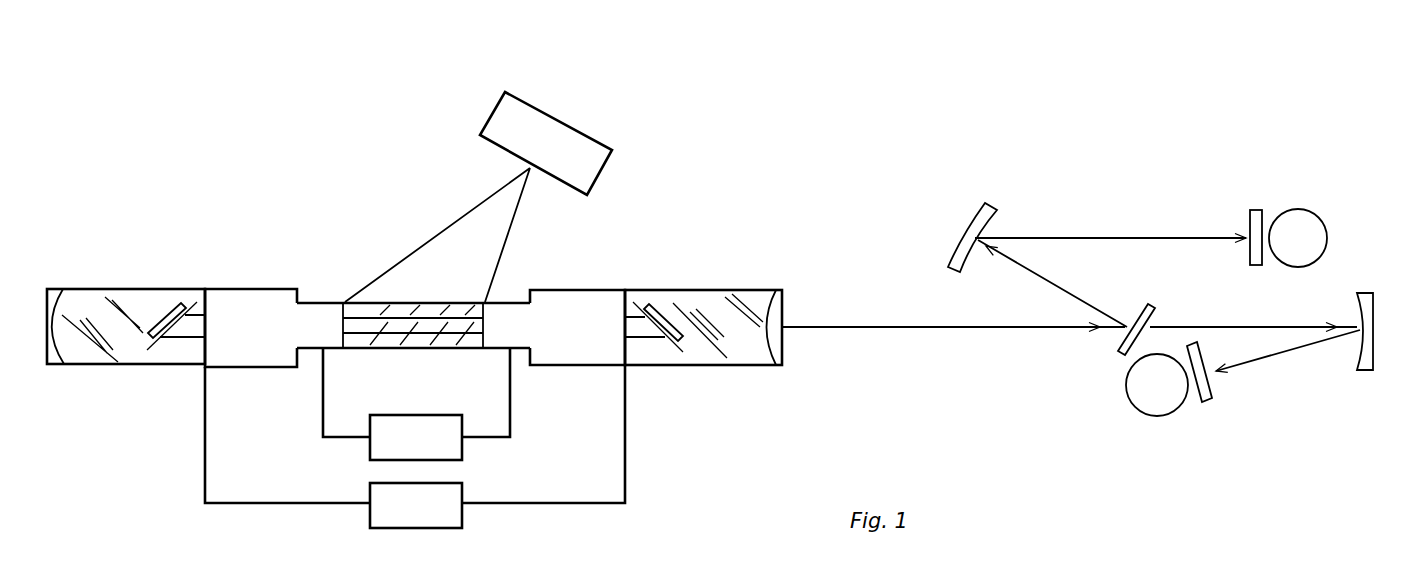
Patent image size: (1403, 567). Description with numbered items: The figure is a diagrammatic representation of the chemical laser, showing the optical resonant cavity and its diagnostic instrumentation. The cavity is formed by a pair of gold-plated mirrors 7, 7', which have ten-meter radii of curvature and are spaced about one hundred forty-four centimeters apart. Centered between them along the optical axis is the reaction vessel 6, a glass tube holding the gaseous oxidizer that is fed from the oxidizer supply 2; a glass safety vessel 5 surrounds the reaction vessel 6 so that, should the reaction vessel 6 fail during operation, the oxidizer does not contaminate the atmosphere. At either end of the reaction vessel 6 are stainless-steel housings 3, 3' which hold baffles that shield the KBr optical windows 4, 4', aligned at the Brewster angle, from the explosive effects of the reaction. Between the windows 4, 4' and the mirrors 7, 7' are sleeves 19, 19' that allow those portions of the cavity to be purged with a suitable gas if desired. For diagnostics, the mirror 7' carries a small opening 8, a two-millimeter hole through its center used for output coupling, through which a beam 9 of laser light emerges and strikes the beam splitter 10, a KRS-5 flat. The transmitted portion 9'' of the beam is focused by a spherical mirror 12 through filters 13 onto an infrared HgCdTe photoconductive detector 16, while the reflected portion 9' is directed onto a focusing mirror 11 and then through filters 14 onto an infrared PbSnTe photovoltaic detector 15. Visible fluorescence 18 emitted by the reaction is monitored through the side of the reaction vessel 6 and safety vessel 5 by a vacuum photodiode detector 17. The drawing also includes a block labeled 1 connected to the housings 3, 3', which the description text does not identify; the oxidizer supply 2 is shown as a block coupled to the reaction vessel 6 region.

The power supply 1 is at (420, 517).
The oxidizer supply 2 is at (420, 451).
The housing 3 is at (367, 328).
The housing 3' is at (577, 327).
The optical window 4 is at (179, 290).
The optical window 4' is at (681, 294).
The safety vessel 5 is at (467, 302).
The reaction vessel 6 is at (437, 302).
The mirror 7 is at (75, 288).
The mirror 7' is at (809, 337).
The opening 8 is at (783, 322).
The beam 9 is at (953, 315).
The reflected portion of beam 9' is at (1110, 281).
The transmitted portion of beam 9'' is at (1255, 332).
The beam splitter 10 is at (1118, 352).
The focusing mirror 11 is at (982, 207).
The spherical mirror 12 is at (1362, 370).
The filters 13 is at (1215, 388).
The filters 14 is at (1255, 208).
The detector 15 is at (1307, 212).
The detector 16 is at (1157, 416).
The detector 17 is at (552, 156).
The visible fluorescence 18 is at (508, 233).
The sleeve 19 is at (711, 352).
The sleeve 19' is at (126, 350).